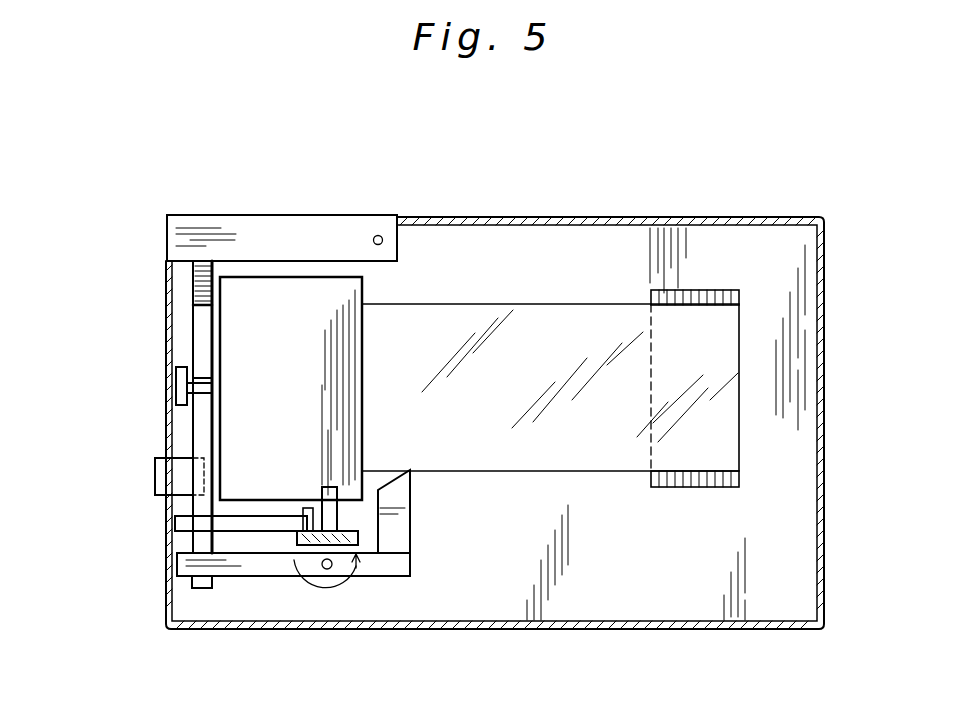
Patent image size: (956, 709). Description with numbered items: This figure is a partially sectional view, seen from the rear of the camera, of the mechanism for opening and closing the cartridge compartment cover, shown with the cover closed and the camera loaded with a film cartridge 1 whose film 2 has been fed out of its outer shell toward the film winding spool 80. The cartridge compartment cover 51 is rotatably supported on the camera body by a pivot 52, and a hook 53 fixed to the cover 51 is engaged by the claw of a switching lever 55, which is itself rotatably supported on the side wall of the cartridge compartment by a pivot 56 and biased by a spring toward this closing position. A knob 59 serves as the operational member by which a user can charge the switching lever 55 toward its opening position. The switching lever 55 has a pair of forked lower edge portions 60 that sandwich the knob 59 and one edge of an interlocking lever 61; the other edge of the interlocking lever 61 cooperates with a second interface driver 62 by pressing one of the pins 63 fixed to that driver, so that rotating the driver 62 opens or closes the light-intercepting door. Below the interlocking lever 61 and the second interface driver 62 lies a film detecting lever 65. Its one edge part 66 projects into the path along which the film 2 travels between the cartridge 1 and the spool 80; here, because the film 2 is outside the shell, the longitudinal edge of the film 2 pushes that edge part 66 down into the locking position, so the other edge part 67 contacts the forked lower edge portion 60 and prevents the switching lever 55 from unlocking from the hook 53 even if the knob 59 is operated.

The film cartridge 1 is at (331, 327).
The film 2 is at (590, 320).
The cartridge compartment cover 51 is at (265, 219).
The pivot 52 is at (382, 236).
The hook 53 is at (200, 283).
The switching lever 55 is at (200, 337).
The pivot 56 is at (182, 387).
The knob 59 is at (160, 478).
The forked lower edge portions 60 is at (200, 590).
The interlocking lever 61 is at (252, 531).
The second interface driver 62 is at (354, 538).
The pins 63 is at (305, 531).
The film detecting lever 65 is at (393, 558).
The one edge part 66 is at (403, 500).
The other edge part 67 is at (178, 565).
The film winding spool 80 is at (688, 488).